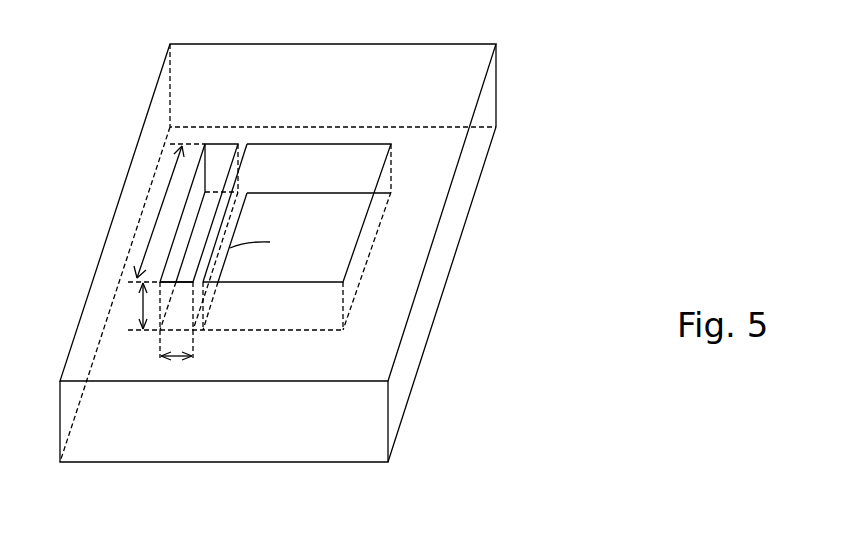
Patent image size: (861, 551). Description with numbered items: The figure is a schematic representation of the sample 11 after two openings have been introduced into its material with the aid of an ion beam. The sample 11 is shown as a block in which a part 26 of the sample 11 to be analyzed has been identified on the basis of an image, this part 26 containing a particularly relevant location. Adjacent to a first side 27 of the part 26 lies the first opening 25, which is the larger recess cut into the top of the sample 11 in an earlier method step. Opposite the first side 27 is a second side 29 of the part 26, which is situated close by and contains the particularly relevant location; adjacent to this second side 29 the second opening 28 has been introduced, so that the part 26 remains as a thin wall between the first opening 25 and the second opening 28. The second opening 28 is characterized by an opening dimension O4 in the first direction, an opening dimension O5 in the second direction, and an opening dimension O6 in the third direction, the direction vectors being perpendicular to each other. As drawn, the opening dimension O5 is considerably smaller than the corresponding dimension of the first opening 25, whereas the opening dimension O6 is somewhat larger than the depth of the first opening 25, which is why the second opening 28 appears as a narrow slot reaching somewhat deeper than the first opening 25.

The sample 11 is at (397, 420).
The first opening 25 is at (338, 257).
The part of the sample to be analyzed 26 is at (223, 207).
The first side 27 is at (270, 242).
The second opening 28 is at (223, 158).
The second side 29 is at (215, 262).
The opening dimension in the first direction O4 is at (170, 175).
The opening dimension in the second direction O5 is at (175, 357).
The opening dimension in the third direction O6 is at (142, 310).